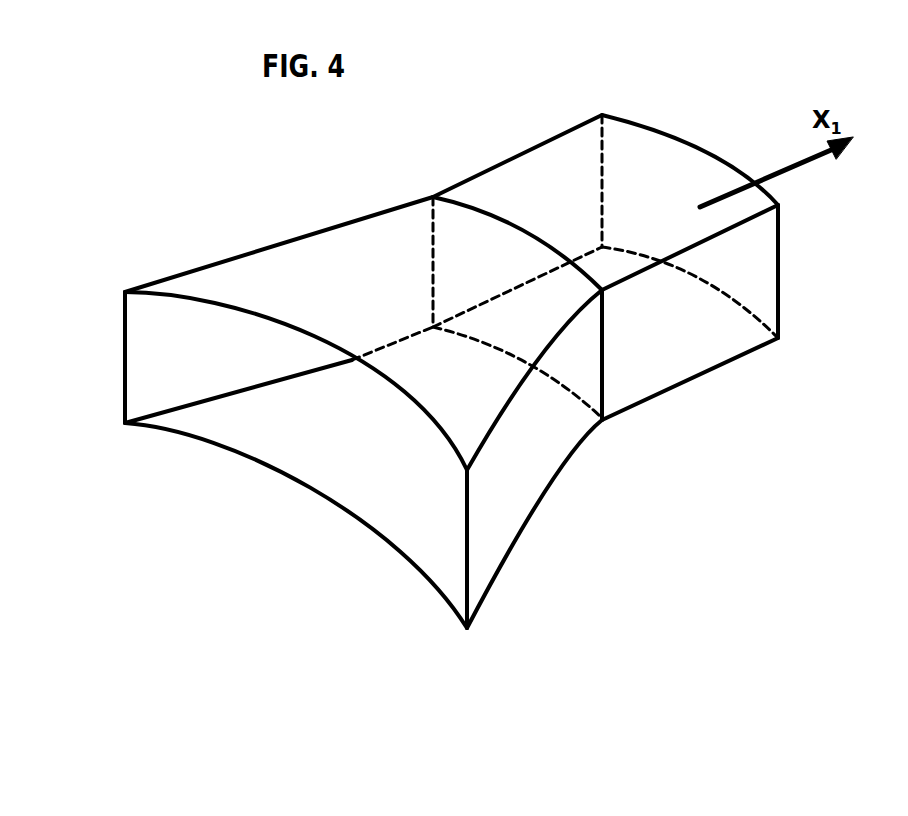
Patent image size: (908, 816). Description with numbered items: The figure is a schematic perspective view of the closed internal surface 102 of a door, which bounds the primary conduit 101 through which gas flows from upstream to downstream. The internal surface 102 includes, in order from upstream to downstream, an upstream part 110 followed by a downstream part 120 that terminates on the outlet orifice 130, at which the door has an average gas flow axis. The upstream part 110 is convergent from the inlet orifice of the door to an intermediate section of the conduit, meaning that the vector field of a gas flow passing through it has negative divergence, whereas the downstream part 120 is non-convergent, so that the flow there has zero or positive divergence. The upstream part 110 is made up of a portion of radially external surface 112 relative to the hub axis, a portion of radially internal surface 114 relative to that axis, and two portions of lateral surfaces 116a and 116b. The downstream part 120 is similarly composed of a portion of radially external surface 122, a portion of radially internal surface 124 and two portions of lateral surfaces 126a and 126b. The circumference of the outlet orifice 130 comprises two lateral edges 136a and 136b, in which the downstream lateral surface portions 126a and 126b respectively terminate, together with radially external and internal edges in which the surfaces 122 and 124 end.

The primary conduit 101 is at (369, 434).
The internal surface 102 is at (378, 498).
The upstream part 110 is at (522, 527).
The portion of radially external surface 112 is at (348, 275).
The portion of radially internal surface 114 is at (291, 442).
The portion of lateral surface 116a is at (542, 452).
The portion of lateral surface 116b is at (152, 355).
The downstream part 120 is at (713, 372).
The portion of radially external surface 122 is at (562, 188).
The portion of radially internal surface 124 is at (643, 355).
The portion of lateral surface 126a is at (718, 327).
The portion of lateral surface 126b is at (515, 201).
The outlet orifice 130 is at (683, 134).
The lateral edge 136a is at (780, 287).
The lateral edge 136b is at (604, 179).